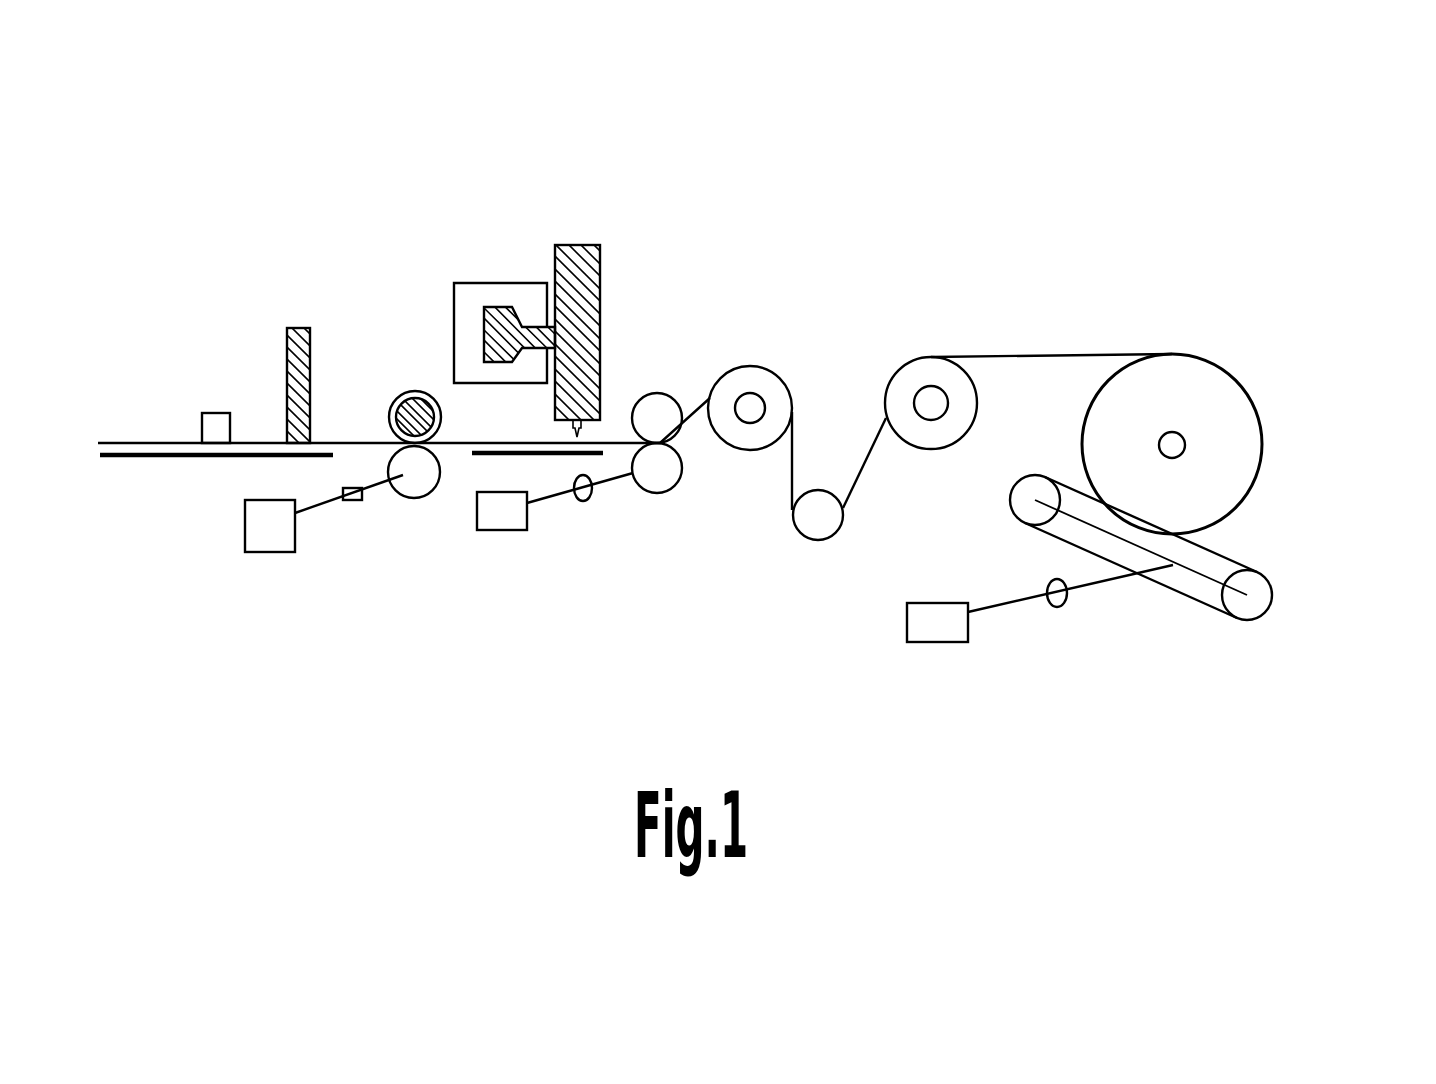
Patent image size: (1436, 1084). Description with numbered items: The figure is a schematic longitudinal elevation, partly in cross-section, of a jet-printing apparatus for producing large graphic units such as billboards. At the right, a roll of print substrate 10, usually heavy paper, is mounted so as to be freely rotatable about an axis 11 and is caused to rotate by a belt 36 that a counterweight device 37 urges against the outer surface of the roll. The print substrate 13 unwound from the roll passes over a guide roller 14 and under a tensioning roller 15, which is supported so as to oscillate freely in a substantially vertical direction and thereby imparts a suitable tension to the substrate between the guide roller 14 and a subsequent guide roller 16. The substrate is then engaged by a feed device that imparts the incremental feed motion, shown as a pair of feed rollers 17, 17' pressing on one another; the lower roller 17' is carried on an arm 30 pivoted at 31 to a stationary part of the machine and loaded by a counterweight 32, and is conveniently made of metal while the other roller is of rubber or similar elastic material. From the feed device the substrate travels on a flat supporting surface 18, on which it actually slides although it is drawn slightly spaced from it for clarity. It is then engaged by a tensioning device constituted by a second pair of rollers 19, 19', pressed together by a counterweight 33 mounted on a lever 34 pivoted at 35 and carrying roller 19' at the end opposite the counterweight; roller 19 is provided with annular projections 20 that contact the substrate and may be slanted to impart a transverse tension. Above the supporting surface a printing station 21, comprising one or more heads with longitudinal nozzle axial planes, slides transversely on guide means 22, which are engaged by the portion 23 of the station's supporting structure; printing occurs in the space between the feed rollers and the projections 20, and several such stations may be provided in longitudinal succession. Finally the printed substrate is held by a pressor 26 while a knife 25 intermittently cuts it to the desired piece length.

The roll of print substrate 10 is at (1237, 405).
The axis 11 is at (1175, 446).
The print substrate 13 is at (1070, 353).
The guide roller 14 is at (935, 370).
The tensioning roller 15 is at (819, 572).
The guide roller 16 is at (763, 387).
The feed roller 17 is at (690, 377).
The feed roller 17' is at (705, 508).
The flat supporting surface 18 is at (478, 458).
The tensioning roller 19 is at (421, 381).
The tensioning roller 19' is at (399, 525).
The annular projections 20 is at (387, 408).
The printing station 21 is at (585, 243).
The guide means 22 is at (465, 298).
The supporting structure portion 23 is at (520, 322).
The knife 25 is at (290, 330).
The pressor 26 is at (205, 413).
The arm 30 is at (623, 480).
The pivot 31 is at (587, 500).
The counterweight 32 is at (502, 518).
The counterweight 33 is at (255, 538).
The lever 34 is at (307, 517).
The pivot 35 is at (355, 500).
The belt 36 is at (1232, 557).
The counterweight device 37 is at (1000, 616).